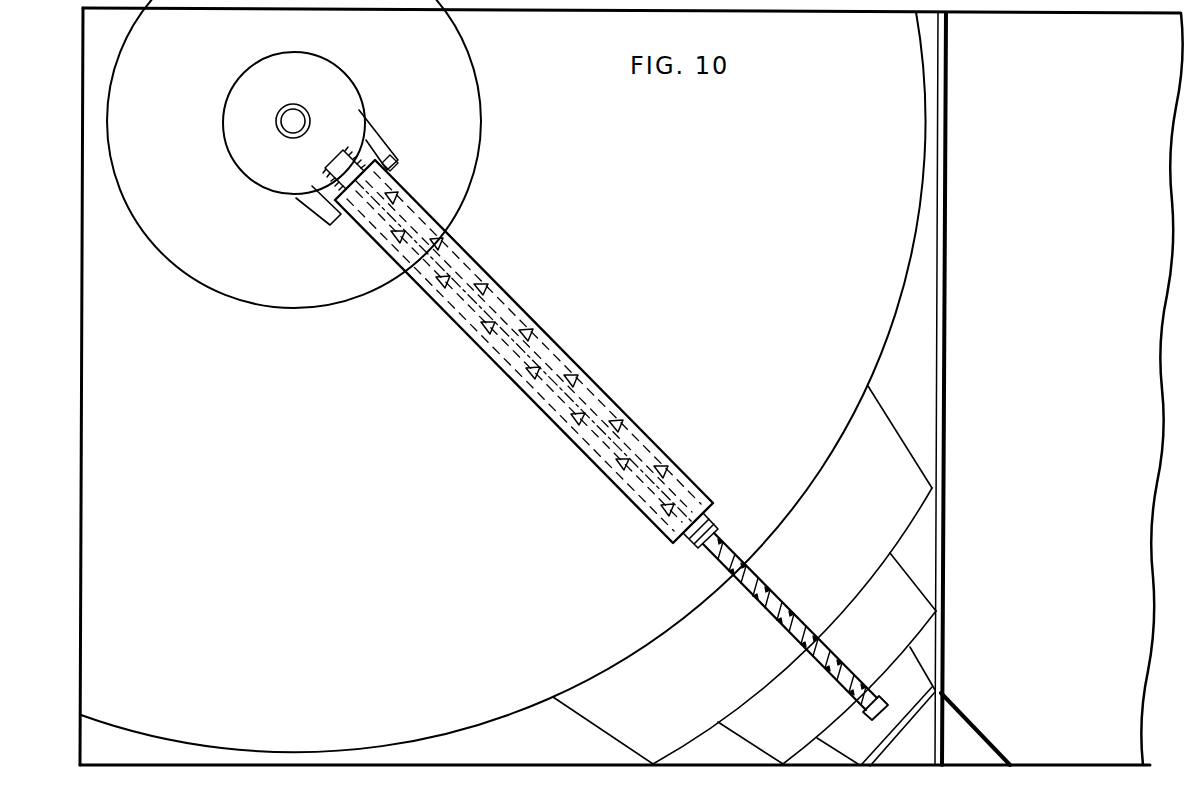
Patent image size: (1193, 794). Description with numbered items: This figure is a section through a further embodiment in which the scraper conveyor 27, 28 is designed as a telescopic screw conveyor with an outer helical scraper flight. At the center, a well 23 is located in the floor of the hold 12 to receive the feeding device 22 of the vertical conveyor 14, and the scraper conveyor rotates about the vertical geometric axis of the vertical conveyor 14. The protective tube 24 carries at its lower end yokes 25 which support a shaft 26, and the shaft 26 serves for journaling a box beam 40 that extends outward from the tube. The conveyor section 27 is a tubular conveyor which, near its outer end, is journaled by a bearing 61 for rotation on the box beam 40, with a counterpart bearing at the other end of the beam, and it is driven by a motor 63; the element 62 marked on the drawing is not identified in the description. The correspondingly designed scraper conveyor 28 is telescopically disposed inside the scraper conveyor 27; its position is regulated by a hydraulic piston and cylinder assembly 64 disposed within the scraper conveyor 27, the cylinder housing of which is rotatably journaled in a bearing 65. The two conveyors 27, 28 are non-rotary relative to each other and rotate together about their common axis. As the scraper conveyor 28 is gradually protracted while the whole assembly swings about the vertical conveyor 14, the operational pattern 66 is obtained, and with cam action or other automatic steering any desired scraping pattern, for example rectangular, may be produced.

The hold 12 is at (948, 262).
The vertical conveyor 14 is at (289, 116).
The feeding device 22 is at (275, 121).
The well 23 is at (291, 286).
The protective tube 24 is at (248, 173).
The yokes 25 is at (372, 136).
The shaft 26 is at (360, 210).
The scraper conveyor 27 is at (560, 420).
The scraper conveyor 28 is at (840, 652).
The box beam 40 is at (616, 412).
The bearing 61 is at (707, 508).
The spring wire 62 is at (469, 346).
The motor 63 is at (360, 210).
The hydraulic piston and cylinder assembly 64 is at (512, 306).
The bearing 65 is at (350, 169).
The operational pattern 66 is at (916, 464).